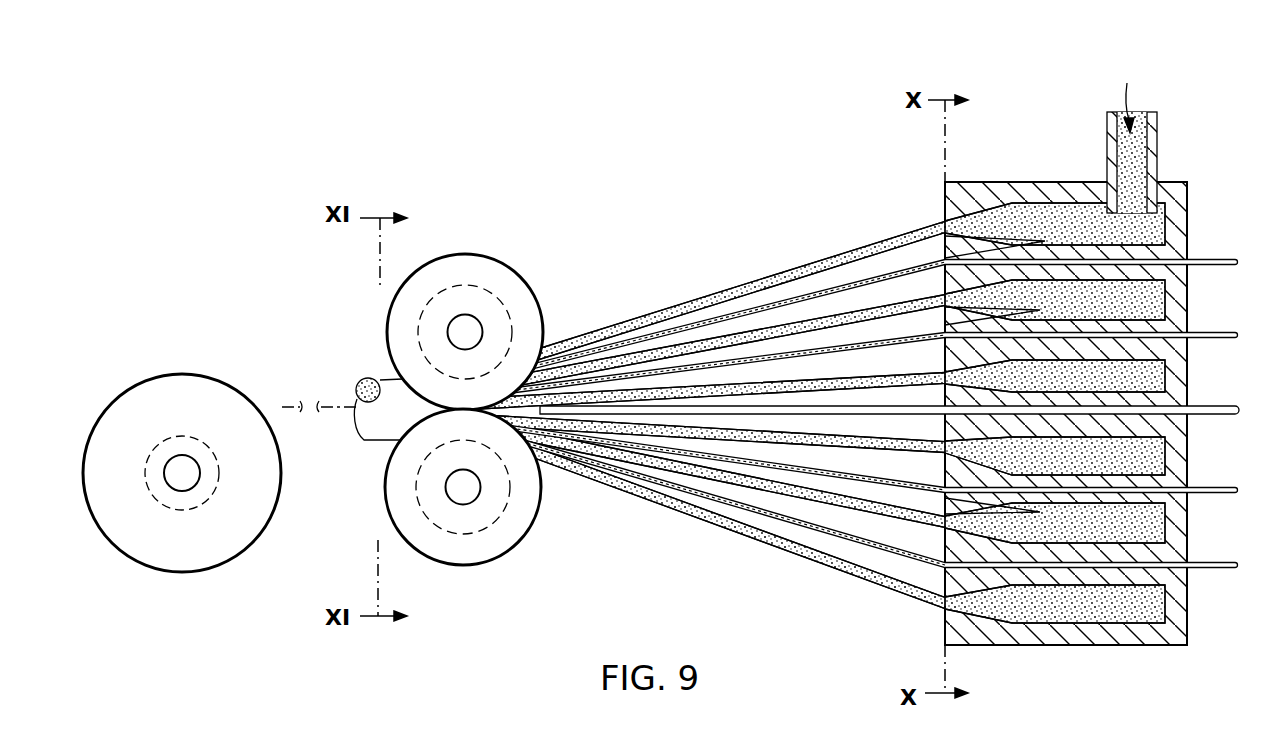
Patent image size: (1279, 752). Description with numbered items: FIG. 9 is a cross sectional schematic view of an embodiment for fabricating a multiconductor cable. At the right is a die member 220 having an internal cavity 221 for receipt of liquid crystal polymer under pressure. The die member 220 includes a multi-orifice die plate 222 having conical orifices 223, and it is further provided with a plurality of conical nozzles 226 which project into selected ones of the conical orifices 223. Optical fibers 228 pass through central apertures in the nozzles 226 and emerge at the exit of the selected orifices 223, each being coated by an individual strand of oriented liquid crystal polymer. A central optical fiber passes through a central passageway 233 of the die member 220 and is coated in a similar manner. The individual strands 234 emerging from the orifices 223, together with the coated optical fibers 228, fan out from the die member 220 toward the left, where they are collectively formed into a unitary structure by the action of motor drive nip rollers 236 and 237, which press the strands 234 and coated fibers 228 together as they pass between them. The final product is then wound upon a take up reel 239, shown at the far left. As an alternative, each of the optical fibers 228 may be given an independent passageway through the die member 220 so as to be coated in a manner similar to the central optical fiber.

The die member 220 is at (1102, 364).
The internal cavity 221 is at (1160, 310).
The multi-orifice die plate 222 is at (957, 195).
The conical orifices 223 is at (1018, 243).
The conical nozzles 226 is at (1153, 283).
The optical fibers 228 is at (1218, 262).
The central passageway 233 is at (1108, 400).
The individual strands 234 is at (737, 337).
The nip roller 236 is at (528, 290).
The nip roller 237 is at (518, 527).
The take up reel 239 is at (215, 555).